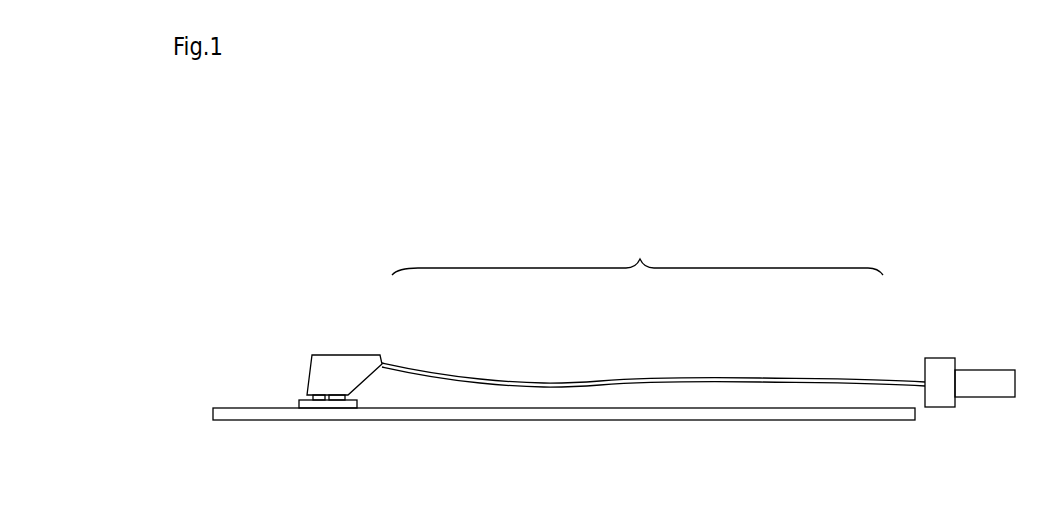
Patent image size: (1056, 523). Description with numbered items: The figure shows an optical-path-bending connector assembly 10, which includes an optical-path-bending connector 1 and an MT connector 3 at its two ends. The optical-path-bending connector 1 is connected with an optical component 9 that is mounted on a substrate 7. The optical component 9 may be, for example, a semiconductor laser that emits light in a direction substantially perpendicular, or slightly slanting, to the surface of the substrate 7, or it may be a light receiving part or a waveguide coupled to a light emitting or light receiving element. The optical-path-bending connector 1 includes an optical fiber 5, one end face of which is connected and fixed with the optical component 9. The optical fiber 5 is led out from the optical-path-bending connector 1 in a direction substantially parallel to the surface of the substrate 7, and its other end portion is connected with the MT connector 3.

The optical-path-bending connector 1 is at (366, 362).
The MT connector 3 is at (940, 360).
The optical fiber 5 is at (577, 381).
The substrate 7 is at (625, 413).
The optical component 9 is at (318, 408).
The optical-path-bending connector assembly 10 is at (640, 258).